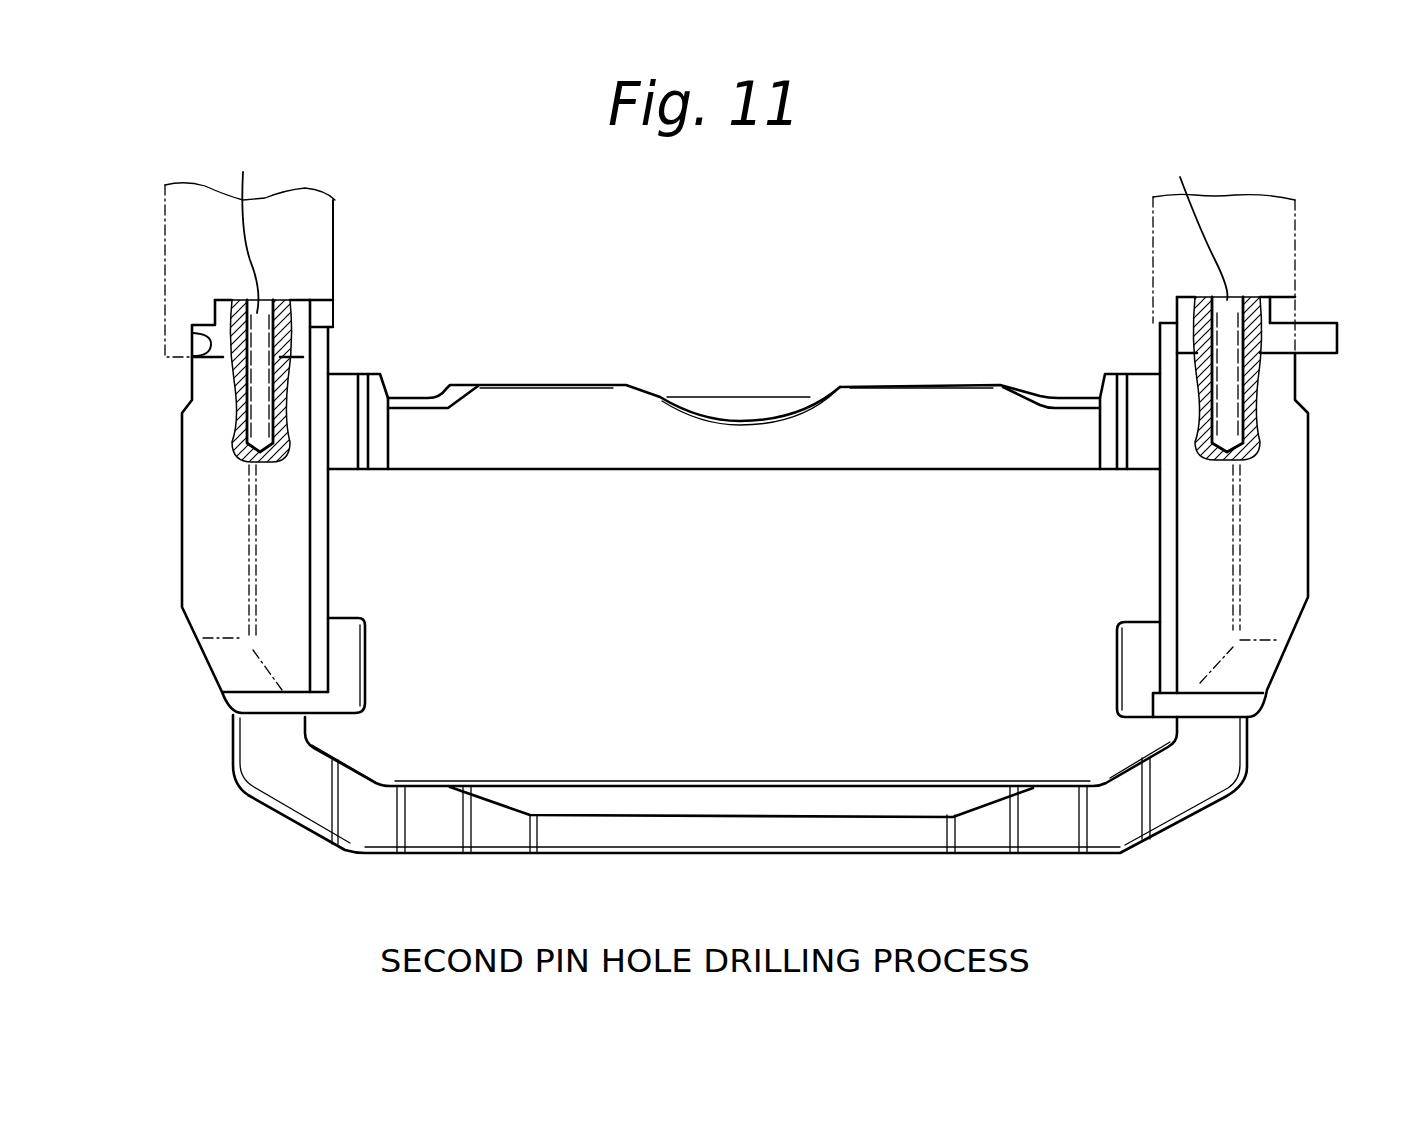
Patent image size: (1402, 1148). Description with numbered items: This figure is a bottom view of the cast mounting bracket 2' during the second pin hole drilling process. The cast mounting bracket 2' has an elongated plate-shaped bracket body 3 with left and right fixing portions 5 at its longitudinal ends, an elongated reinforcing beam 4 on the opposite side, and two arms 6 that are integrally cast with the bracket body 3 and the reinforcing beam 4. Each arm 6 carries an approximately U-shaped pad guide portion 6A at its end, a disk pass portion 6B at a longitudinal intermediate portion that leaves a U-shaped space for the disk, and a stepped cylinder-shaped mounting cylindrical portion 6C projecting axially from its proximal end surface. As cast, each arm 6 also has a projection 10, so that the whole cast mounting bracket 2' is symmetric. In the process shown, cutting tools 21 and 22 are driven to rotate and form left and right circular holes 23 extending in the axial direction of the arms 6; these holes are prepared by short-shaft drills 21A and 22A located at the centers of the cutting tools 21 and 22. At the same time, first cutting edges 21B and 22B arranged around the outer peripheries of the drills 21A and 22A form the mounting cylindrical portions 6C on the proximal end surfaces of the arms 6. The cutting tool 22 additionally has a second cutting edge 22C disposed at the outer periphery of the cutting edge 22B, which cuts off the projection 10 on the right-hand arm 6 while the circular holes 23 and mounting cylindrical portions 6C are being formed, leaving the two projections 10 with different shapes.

The cast mounting bracket 2' is at (1294, 737).
The bracket body 3 is at (745, 432).
The reinforcing beam 4 is at (742, 837).
The fixing portion 5 is at (560, 385).
The arm 6 is at (197, 525).
The pad guide portion 6A is at (378, 377).
The disk pass portion 6B is at (340, 617).
The mounting cylindrical portion 6C is at (223, 300).
The projection 10 is at (1323, 340).
The cutting tool 21 is at (1245, 193).
The short-shaft drill 21A is at (1257, 430).
The first cutting edge 21B is at (1293, 293).
The cutting tool 22 is at (322, 190).
The short-shaft drill 22A is at (253, 393).
The first cutting edge 22B is at (313, 300).
The second cutting edge 22C is at (197, 360).
The circular hole 23 is at (736, 287).